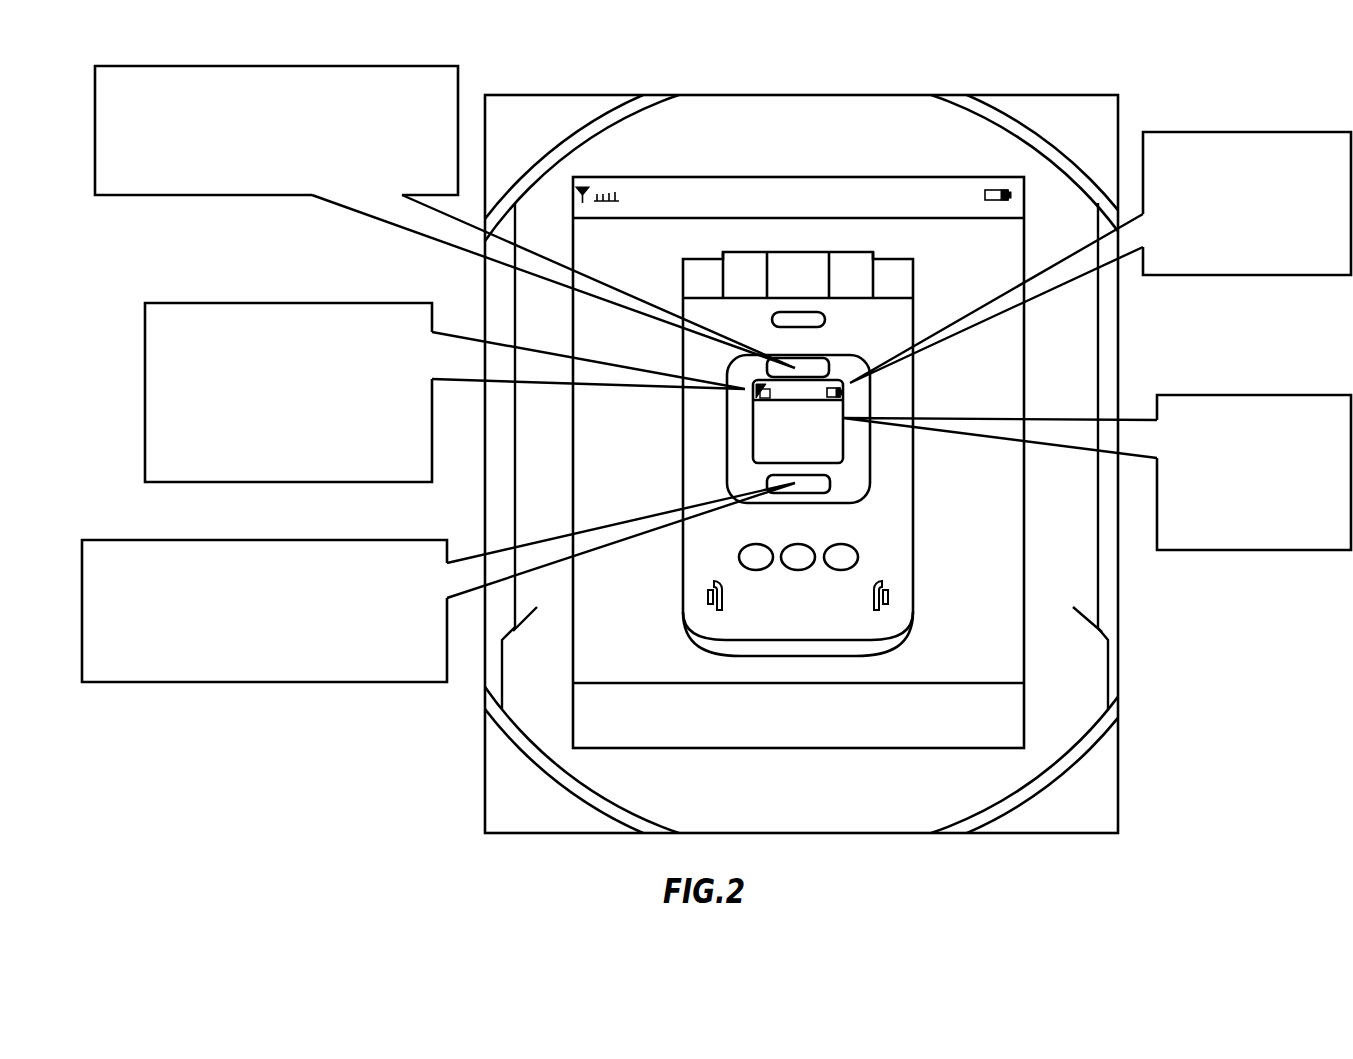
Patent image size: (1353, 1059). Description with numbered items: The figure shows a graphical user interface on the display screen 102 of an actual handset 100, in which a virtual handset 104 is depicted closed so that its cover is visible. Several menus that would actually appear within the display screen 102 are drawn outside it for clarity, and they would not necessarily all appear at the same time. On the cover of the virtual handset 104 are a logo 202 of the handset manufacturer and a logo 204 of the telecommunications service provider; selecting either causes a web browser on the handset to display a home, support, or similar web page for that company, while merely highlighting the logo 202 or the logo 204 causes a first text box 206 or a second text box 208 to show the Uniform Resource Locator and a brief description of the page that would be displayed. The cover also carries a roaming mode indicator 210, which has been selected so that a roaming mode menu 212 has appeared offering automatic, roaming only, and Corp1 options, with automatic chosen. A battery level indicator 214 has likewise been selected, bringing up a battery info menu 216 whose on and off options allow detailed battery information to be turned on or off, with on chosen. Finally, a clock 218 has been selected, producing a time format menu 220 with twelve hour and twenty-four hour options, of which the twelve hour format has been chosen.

The handset 100 is at (478, 766).
The display screen 102 is at (602, 643).
The virtual handset 104 is at (913, 541).
The logo 202 is at (813, 370).
The logo 204 is at (780, 478).
The first text box 206 is at (193, 66).
The second text box 208 is at (192, 683).
The roaming mode indicator 210 is at (752, 383).
The 'roaming mode' menu 212 is at (222, 302).
The battery level indicator 214 is at (845, 393).
The 'battery info' menu 216 is at (1268, 132).
The clock 218 is at (838, 442).
The 'time format' menu 220 is at (1265, 395).